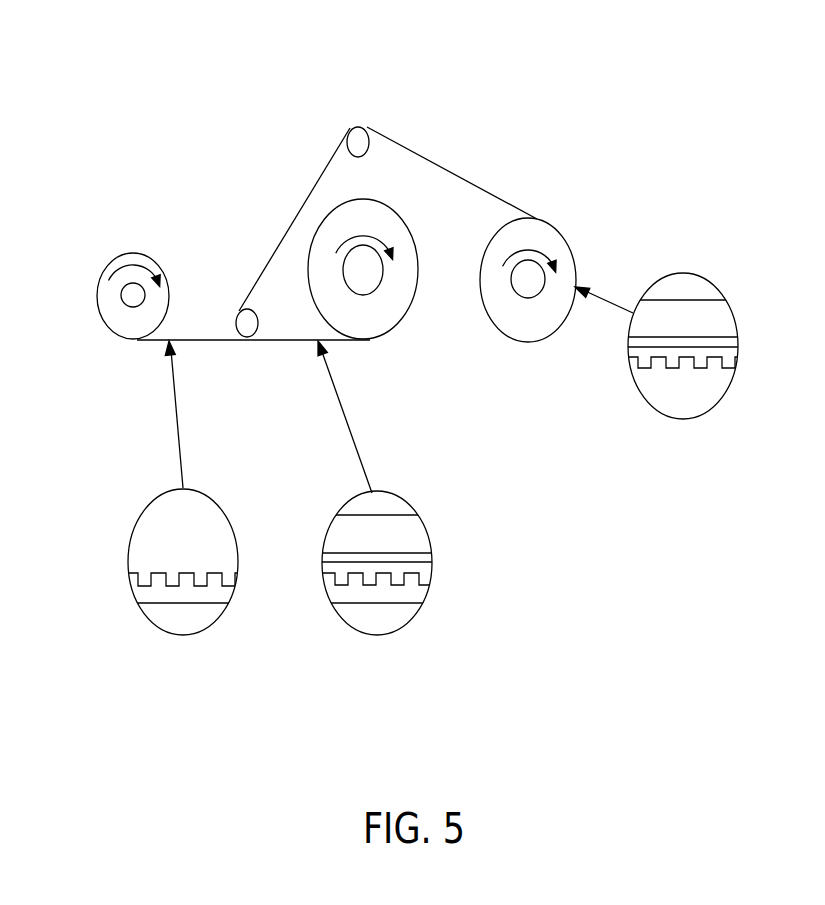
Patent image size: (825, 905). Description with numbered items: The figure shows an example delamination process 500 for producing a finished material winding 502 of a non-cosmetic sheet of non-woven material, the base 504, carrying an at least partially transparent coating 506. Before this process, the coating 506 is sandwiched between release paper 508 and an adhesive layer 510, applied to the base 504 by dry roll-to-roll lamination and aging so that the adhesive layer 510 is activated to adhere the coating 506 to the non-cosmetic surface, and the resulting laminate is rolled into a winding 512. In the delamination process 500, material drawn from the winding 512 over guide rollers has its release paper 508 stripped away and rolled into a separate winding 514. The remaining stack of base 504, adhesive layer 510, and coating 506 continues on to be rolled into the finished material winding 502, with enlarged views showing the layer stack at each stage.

The delamination process 500 is at (160, 51).
The finished material winding 502 is at (563, 233).
The base 504 is at (730, 314).
The at least partially transparent coating 506 is at (732, 364).
The release paper 508 is at (220, 594).
The adhesive layer 510 is at (733, 342).
The winding 512 is at (378, 205).
The winding 514 is at (158, 263).